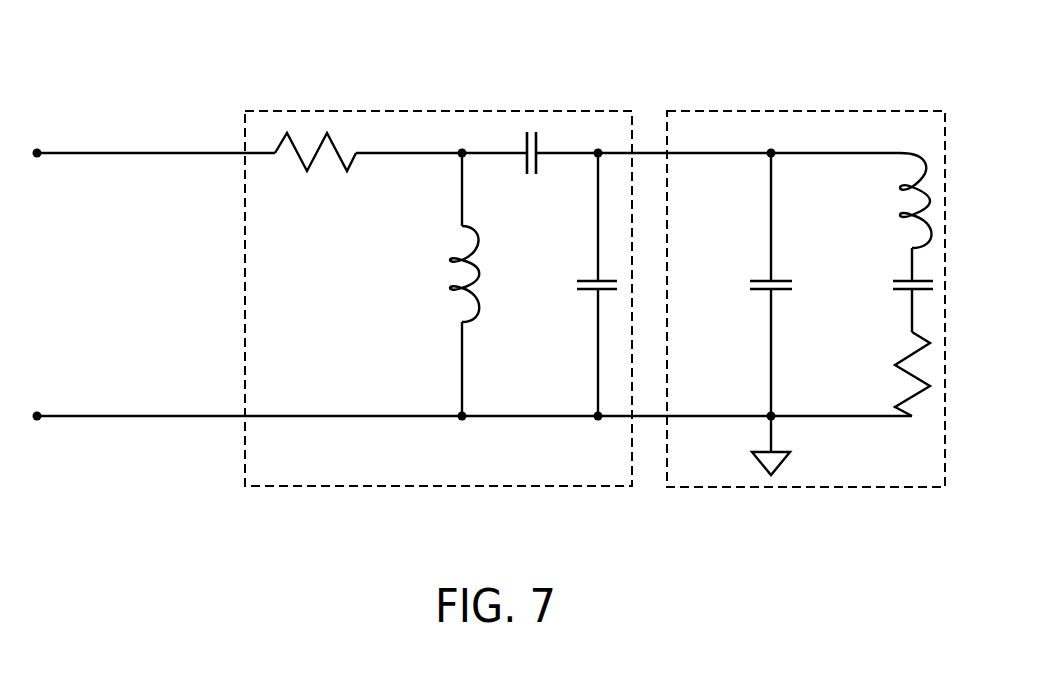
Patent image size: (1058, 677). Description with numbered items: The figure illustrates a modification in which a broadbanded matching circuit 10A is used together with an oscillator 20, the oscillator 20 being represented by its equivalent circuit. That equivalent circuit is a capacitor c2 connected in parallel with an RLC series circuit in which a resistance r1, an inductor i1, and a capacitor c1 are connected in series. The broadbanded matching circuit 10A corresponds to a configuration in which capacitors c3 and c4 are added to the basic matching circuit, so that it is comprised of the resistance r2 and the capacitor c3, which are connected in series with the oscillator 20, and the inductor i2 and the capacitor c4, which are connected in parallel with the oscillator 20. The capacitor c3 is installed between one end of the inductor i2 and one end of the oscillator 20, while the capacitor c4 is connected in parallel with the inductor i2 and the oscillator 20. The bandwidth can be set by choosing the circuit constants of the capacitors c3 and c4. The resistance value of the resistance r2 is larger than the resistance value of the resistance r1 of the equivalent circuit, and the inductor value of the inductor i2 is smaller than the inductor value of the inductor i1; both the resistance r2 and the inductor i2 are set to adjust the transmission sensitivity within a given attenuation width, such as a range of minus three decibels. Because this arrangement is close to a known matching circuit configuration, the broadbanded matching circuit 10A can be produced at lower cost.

The broadbanded matching circuit 10A is at (407, 109).
The oscillator 20 is at (689, 110).
The resistance r2 is at (338, 150).
The capacitor c3 is at (538, 142).
The inductor i2 is at (454, 259).
The capacitor c4 is at (590, 280).
The capacitor c2 is at (762, 280).
The inductor i1 is at (900, 187).
The capacitor c1 is at (904, 280).
The resistance r1 is at (900, 352).